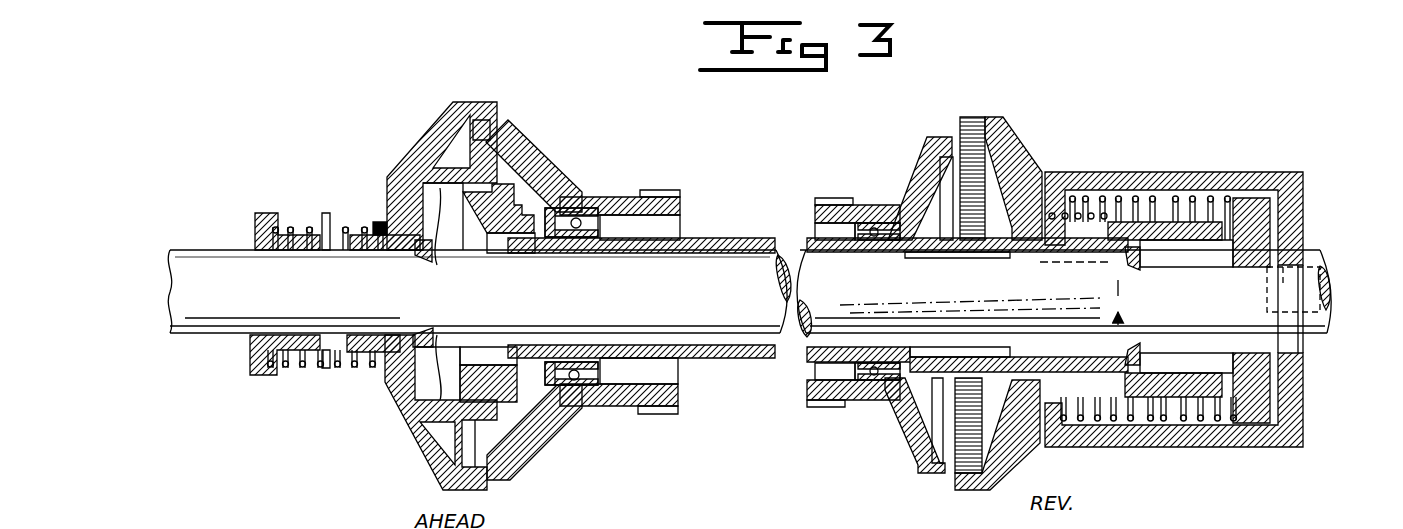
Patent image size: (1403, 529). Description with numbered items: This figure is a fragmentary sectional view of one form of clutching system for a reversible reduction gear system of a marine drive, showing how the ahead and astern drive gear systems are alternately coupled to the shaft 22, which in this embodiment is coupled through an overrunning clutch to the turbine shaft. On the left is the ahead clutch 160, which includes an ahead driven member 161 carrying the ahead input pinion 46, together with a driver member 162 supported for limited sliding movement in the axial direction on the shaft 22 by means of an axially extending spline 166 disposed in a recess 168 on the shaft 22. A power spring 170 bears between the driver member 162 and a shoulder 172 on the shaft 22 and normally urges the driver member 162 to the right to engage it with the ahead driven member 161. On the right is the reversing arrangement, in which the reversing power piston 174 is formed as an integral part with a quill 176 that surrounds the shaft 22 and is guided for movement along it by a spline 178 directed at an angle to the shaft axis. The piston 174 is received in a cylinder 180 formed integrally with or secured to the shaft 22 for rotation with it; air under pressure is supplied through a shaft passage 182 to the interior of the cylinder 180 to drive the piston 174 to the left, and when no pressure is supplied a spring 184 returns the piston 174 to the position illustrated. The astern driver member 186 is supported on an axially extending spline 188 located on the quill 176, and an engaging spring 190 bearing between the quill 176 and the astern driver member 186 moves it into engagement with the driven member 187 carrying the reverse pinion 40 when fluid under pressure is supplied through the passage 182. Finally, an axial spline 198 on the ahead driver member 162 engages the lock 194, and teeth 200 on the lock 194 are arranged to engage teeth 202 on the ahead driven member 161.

The shaft 22 is at (827, 333).
The reverse pinion 40 is at (833, 201).
The ahead input pinion 46 is at (663, 193).
The ahead clutch 160 is at (588, 127).
The ahead driven member 161 is at (508, 145).
The driver member 162 is at (452, 100).
The axially extending spline 166 is at (341, 227).
The recess 168 is at (330, 243).
The power spring 170 is at (316, 233).
The shoulder 172 is at (272, 213).
The reversing power piston 174 is at (1270, 215).
The quill 176 is at (842, 248).
The spline 178 is at (940, 250).
The cylinder 180 is at (1247, 173).
The shaft passage 182 is at (1312, 270).
The spring 184 is at (1152, 220).
The astern driver member 186 is at (1010, 150).
The driven member 187 is at (920, 160).
The axially extending spline 188 is at (1098, 255).
The engaging spring 190 is at (1117, 197).
The lock 194 is at (465, 205).
The axial spline 198 is at (441, 294).
The teeth 200 is at (548, 187).
The teeth 202 is at (517, 413).